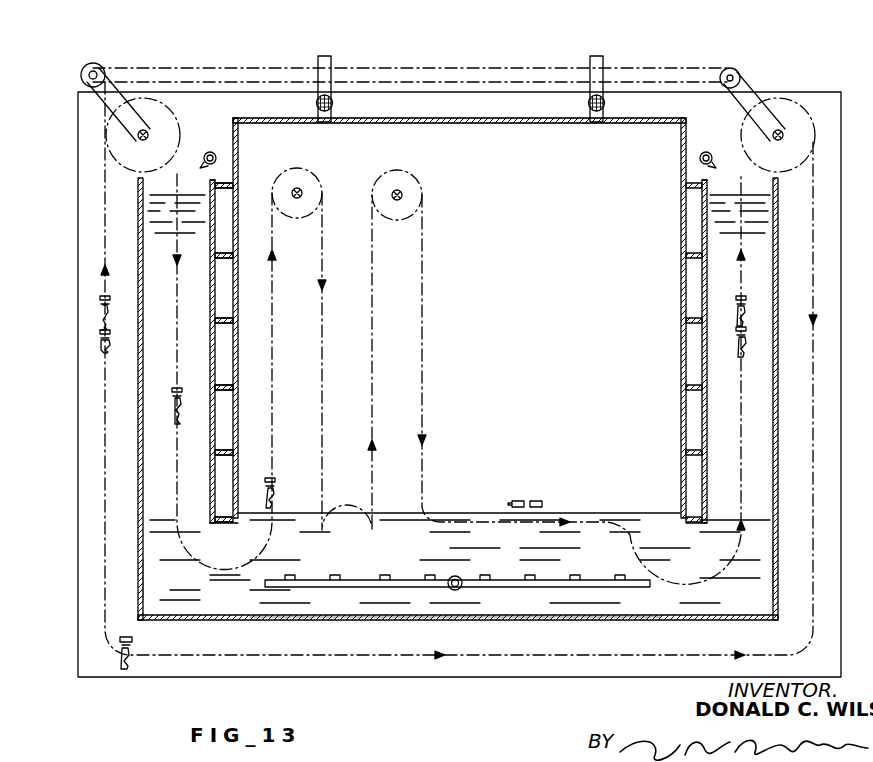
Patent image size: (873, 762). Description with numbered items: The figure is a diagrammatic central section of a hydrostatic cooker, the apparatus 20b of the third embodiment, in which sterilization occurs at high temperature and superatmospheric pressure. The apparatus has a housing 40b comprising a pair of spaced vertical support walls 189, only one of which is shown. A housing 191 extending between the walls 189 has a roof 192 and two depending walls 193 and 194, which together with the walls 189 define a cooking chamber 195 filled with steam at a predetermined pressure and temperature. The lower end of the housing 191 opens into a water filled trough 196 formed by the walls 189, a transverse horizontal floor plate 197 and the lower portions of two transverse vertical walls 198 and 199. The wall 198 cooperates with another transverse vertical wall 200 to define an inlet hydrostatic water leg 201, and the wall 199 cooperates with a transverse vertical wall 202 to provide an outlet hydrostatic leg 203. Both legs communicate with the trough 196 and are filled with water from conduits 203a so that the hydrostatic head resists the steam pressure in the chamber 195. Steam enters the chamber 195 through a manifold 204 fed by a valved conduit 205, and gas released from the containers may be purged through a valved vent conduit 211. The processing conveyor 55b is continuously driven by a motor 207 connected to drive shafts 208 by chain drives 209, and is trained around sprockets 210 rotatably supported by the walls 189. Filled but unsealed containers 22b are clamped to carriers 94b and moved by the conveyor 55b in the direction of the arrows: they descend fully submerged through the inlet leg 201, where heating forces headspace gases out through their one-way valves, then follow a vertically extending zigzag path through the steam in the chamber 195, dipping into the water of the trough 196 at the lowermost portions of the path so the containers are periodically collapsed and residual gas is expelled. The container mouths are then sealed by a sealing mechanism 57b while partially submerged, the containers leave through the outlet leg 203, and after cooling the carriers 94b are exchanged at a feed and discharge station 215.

The apparatus 20b is at (487, 50).
The vertical support walls 189 is at (815, 100).
The housing 191 is at (460, 120).
The roof 192 is at (538, 124).
The depending wall 193 is at (240, 134).
The depending wall 194 is at (649, 318).
The cooking chamber 195 is at (518, 262).
The water filled trough 196 is at (697, 604).
The floor plate 197 is at (372, 616).
The transverse vertical wall 198 is at (144, 584).
The transverse vertical wall 199 is at (772, 560).
The transverse vertical wall 200 is at (215, 336).
The inlet hydrostatic water leg 201 is at (195, 385).
The transverse vertical wall 202 is at (690, 270).
The outlet hydrostatic leg 203 is at (725, 380).
The conduits 203a is at (217, 158).
The manifold 204 is at (568, 570).
The valved conduit 205 is at (603, 60).
The motor 207 is at (103, 52).
The drive shafts 208 is at (162, 145).
The chain drives 209 is at (125, 97).
The sprockets 210 is at (748, 168).
The valved vent conduit 211 is at (331, 58).
The feed and discharge station 215 is at (112, 557).
The containers 22b is at (736, 298).
The housing 40b is at (234, 121).
The processing conveyor 55b is at (182, 173).
The sealing mechanism 57b is at (530, 498).
The carriers 94b is at (731, 348).